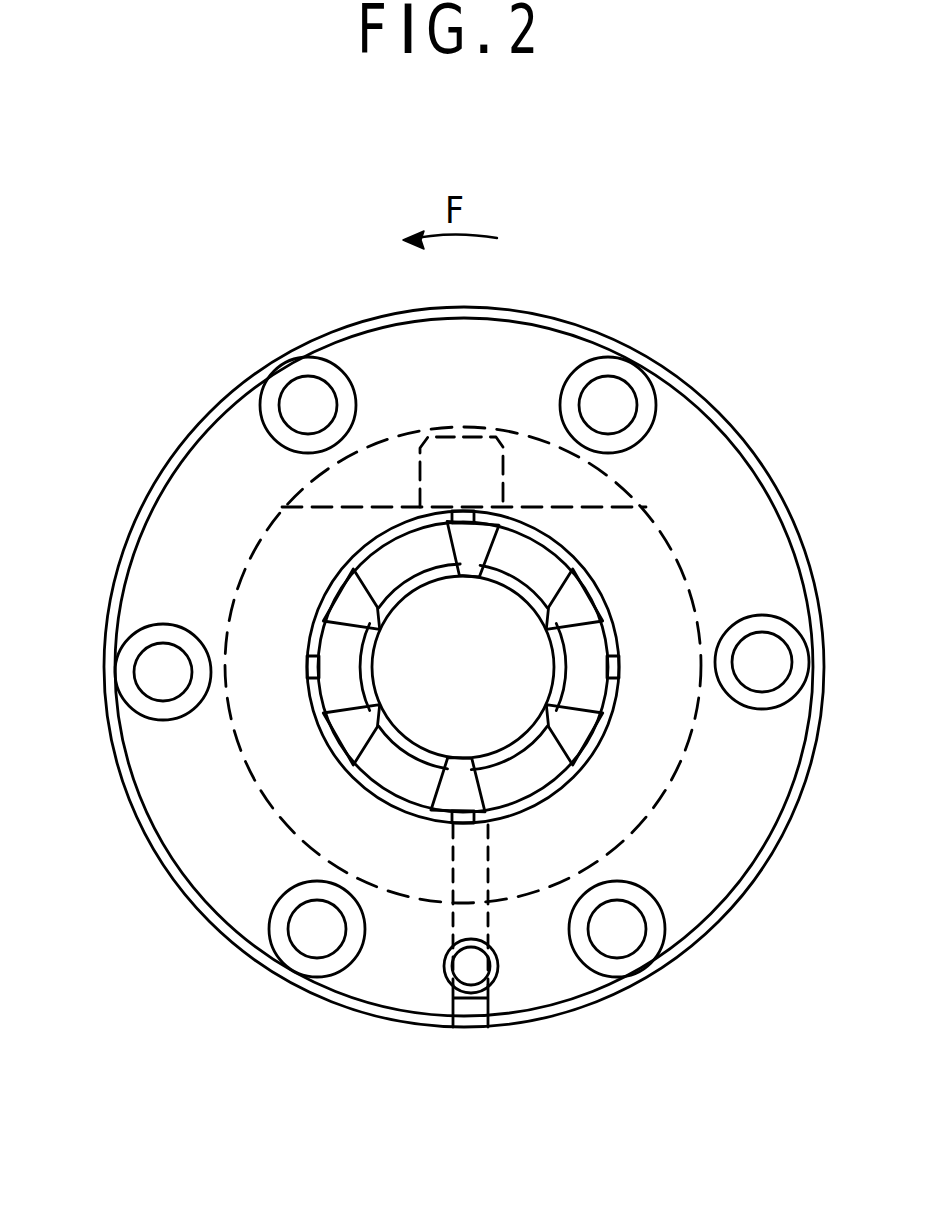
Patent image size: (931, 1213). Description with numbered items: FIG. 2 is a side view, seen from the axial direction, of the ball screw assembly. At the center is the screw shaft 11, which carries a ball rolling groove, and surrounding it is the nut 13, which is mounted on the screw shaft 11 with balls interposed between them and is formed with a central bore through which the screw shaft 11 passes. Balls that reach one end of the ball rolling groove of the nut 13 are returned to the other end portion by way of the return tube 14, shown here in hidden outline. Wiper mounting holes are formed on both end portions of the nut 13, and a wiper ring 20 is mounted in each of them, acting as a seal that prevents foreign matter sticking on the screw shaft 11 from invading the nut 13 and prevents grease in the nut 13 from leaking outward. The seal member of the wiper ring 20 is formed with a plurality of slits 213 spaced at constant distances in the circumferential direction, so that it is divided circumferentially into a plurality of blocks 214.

The screw shaft 11 is at (493, 597).
The nut 13 is at (755, 515).
The return tube 14 is at (401, 447).
The wiper ring 20 is at (536, 556).
The slit 213 is at (367, 598).
The block 214 is at (400, 556).